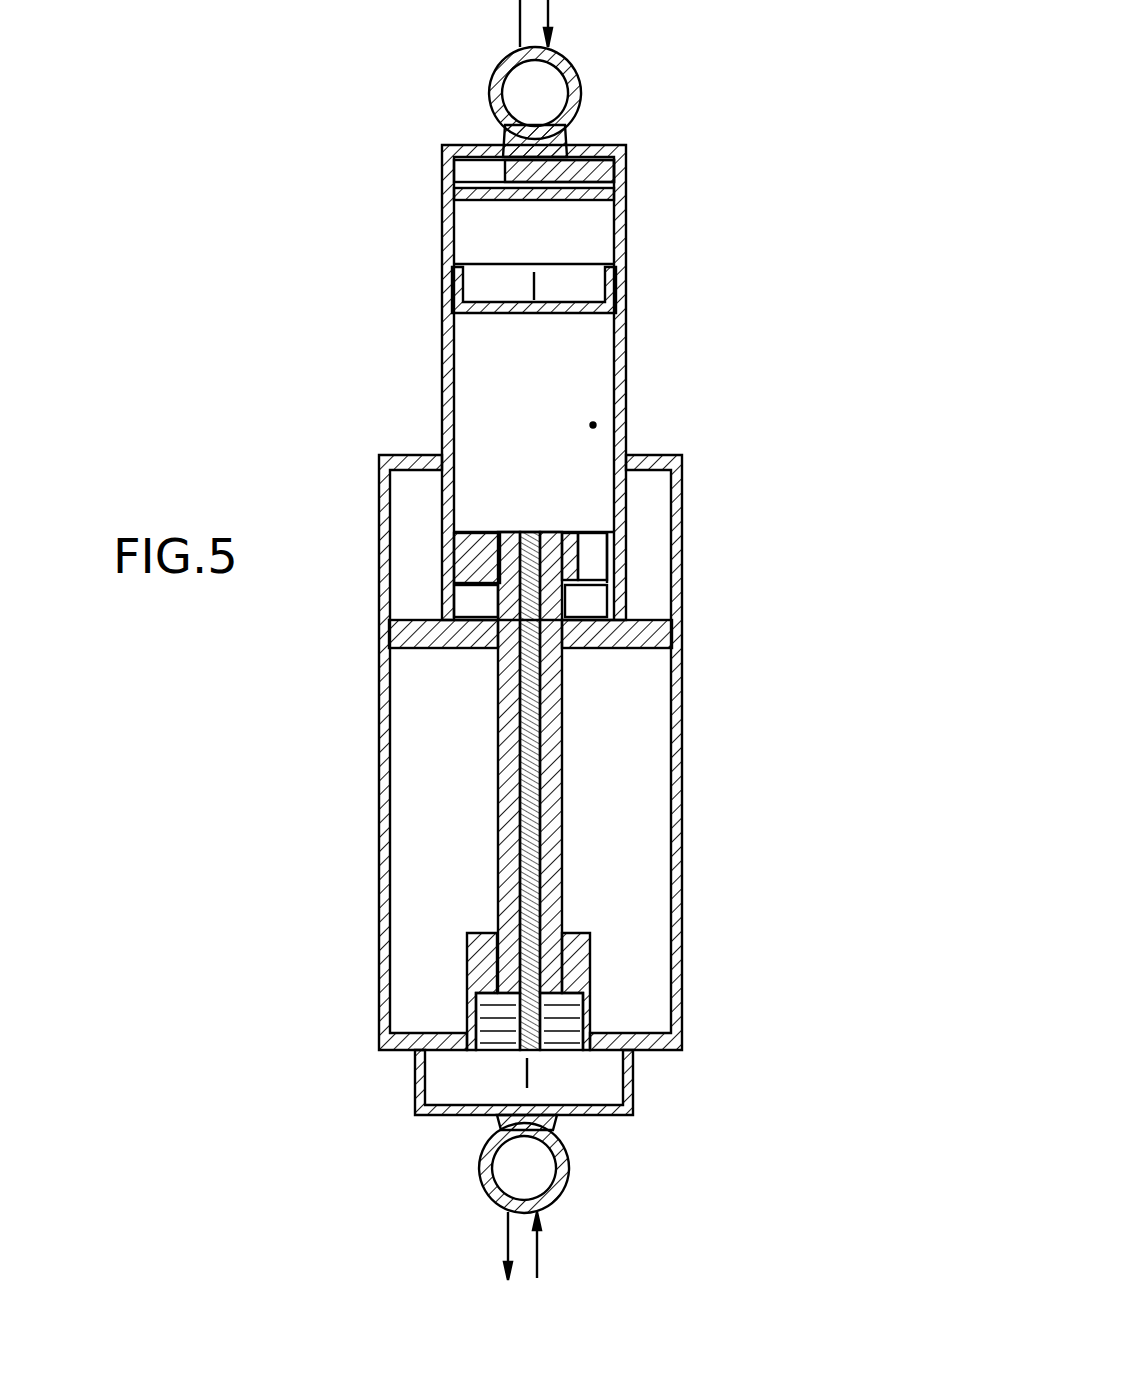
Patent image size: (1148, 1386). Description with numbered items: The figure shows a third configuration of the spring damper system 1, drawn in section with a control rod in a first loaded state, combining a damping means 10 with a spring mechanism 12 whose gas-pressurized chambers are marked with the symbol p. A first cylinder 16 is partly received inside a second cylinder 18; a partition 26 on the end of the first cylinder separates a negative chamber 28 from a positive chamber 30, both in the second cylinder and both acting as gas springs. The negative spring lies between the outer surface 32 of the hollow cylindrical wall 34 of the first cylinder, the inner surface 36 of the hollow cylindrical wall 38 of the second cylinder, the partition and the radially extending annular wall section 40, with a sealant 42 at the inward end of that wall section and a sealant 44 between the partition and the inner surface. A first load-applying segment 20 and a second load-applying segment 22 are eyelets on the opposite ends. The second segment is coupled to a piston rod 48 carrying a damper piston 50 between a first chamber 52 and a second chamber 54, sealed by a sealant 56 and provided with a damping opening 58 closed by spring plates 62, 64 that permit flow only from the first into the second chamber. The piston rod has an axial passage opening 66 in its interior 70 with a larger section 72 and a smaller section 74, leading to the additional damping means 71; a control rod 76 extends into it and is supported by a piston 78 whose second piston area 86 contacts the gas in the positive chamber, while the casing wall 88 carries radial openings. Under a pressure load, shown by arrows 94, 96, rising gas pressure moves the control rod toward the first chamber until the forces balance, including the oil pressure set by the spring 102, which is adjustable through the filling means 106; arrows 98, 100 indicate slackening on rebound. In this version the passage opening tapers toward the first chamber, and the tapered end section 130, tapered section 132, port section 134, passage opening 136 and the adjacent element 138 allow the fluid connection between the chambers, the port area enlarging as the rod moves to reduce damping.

The spring damper system 1 is at (830, 51).
The damping means 10 is at (546, 506).
The spring mechanism 12 is at (677, 658).
The first cylinder 16 is at (627, 343).
The second cylinder 18 is at (683, 692).
The first load-applying segment 20 is at (570, 80).
The second load-applying segment 22 is at (570, 1173).
The partition 26 is at (389, 637).
The negative chamber 28 is at (423, 603).
The positive chamber 30 is at (437, 765).
The outer surface 32 is at (441, 397).
The hollow cylindrical wall 34 is at (441, 327).
The inner surface 36 is at (400, 727).
The hollow cylindrical wall 38 is at (385, 803).
The annular wall section 40 is at (683, 470).
The sealant 42 is at (682, 453).
The sealant 44 is at (682, 637).
The piston rod 48 is at (505, 738).
The damper piston 50 is at (455, 553).
The first chamber 52 is at (593, 425).
The second chamber 54 is at (608, 603).
The sealant 56 is at (608, 562).
The damping opening 58 is at (608, 545).
The spring plate 62 is at (610, 567).
The spring plate 64 is at (417, 582).
The passage opening 66 is at (560, 787).
The interior of piston rod 70 is at (535, 532).
The additional damping means 71 is at (462, 1012).
The section 72 is at (560, 858).
The section 74 is at (497, 673).
The control rod 76 is at (560, 830).
The piston 78 is at (563, 1060).
The second piston area 86 is at (525, 1052).
The casing wall 88 is at (495, 1000).
The arrow 94 is at (563, 0).
The arrow 96 is at (540, 1238).
The arrow 98 is at (520, 23).
The arrow 100 is at (507, 1240).
The spring 102 is at (483, 222).
The filling means 106 is at (597, 172).
The end section 130 is at (455, 540).
The tapered section 132 is at (470, 575).
The port section 134 is at (480, 562).
The passage opening 136 is at (683, 610).
The valve orifice 138 is at (455, 565).